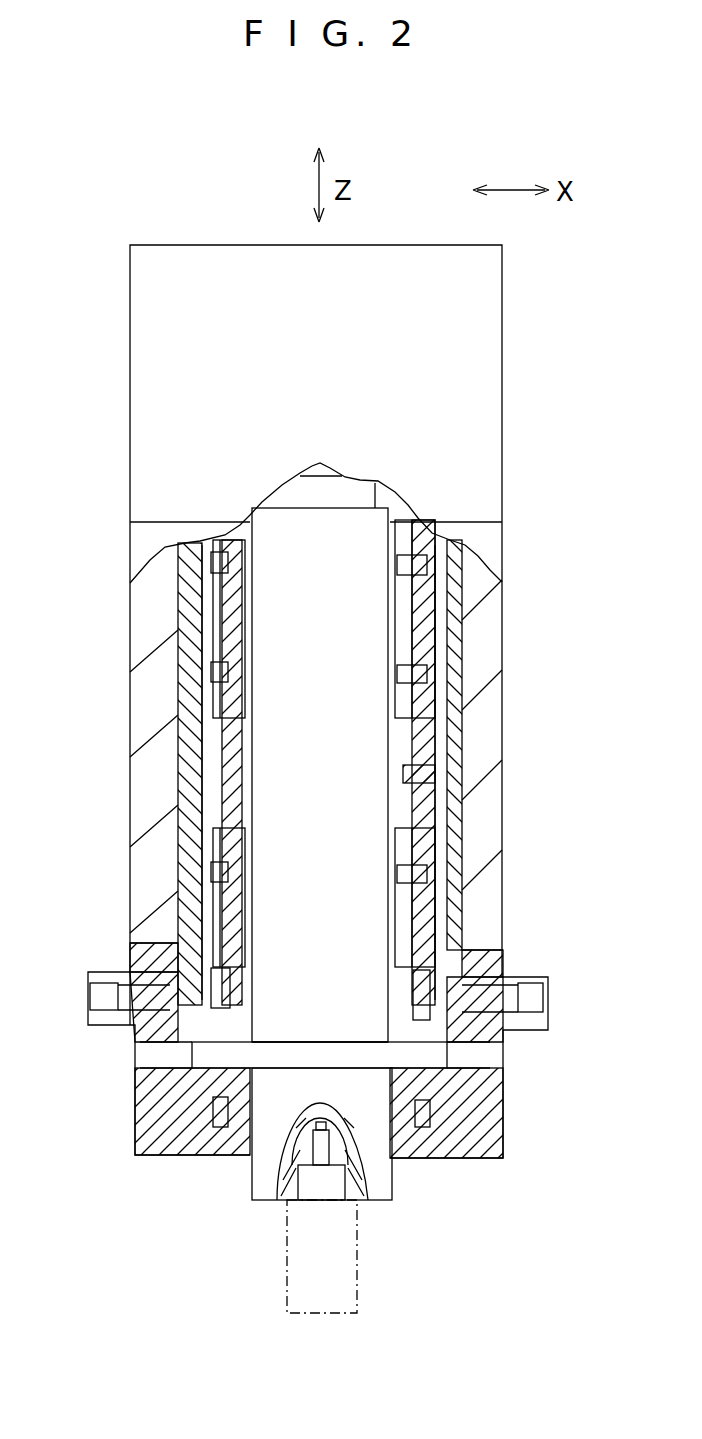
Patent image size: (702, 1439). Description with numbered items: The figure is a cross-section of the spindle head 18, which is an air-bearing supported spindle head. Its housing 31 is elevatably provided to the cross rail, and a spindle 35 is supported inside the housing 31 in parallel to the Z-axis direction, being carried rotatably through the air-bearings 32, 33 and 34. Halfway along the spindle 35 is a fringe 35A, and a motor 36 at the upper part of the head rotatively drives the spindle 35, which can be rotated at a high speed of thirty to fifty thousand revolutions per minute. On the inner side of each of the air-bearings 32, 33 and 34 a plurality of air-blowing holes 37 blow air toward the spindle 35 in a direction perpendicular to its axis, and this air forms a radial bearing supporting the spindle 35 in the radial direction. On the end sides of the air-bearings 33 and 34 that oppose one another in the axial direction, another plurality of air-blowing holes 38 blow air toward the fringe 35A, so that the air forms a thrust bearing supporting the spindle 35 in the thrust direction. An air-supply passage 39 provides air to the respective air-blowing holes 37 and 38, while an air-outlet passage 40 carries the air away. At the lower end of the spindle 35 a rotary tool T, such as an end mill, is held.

The spindle head 18 is at (130, 376).
The housing 31 is at (497, 793).
The air-bearing 32 is at (415, 637).
The air-bearing 33 is at (405, 895).
The air-bearing 34 is at (452, 1098).
The spindle 35 is at (262, 1173).
The fringe 35A is at (322, 1042).
The motor 36 is at (502, 383).
The air-blowing holes 37 is at (397, 563).
The air-blowing holes 38 is at (213, 1052).
The air-supply passage 39 is at (202, 787).
The air-outlet passage 40 is at (447, 822).
The rotary tool T is at (357, 1258).